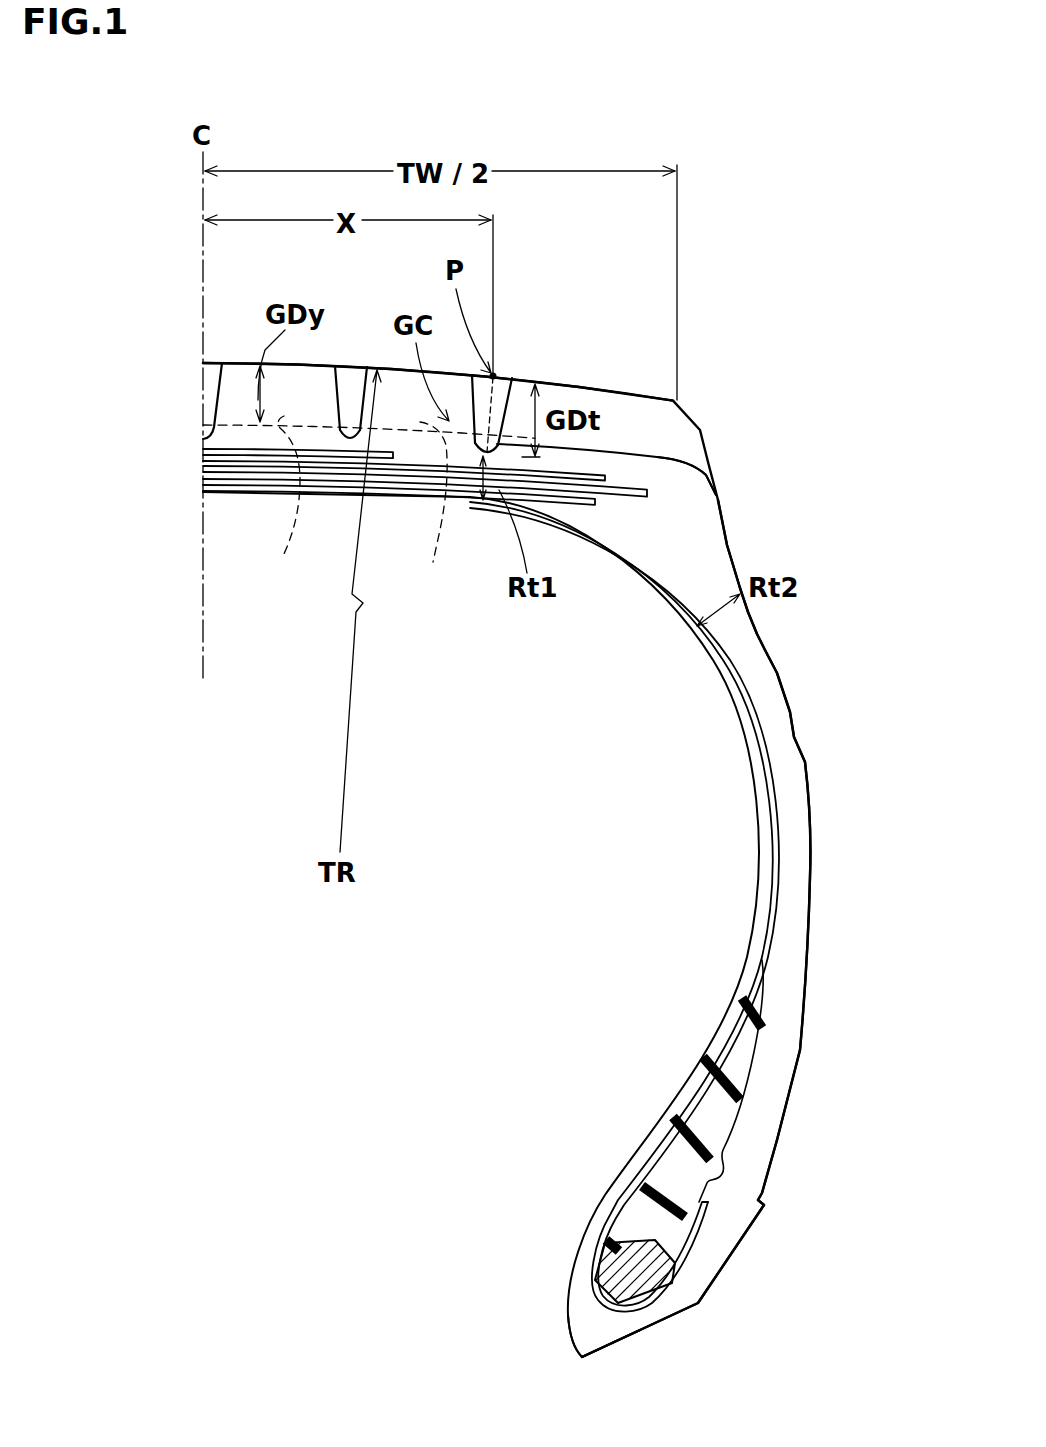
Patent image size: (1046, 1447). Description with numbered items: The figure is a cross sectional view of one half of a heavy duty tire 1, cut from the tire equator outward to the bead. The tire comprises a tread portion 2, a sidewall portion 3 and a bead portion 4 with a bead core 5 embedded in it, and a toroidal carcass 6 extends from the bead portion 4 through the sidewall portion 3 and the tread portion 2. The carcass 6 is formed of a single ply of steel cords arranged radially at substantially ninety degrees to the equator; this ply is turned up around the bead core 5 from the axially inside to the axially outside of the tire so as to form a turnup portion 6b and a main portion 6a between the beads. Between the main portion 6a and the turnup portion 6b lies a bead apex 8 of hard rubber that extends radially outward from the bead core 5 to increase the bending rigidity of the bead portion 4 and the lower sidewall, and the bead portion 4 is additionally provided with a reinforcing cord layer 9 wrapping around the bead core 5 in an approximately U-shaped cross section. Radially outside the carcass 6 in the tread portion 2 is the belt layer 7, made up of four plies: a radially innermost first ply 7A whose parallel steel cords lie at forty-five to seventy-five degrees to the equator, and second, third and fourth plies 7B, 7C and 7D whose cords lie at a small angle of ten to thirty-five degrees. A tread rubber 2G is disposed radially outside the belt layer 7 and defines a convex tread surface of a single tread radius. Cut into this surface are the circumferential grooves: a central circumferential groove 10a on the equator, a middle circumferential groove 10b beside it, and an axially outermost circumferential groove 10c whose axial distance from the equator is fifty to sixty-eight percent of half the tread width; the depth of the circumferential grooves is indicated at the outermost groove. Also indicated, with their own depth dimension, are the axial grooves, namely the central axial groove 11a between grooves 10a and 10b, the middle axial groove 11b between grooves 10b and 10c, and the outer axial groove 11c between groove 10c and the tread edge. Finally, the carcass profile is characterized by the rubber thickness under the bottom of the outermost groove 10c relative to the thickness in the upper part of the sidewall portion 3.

The heavy duty tire 1 is at (701, 252).
The tread portion 2 is at (585, 293).
The tread rubber 2G is at (628, 387).
The sidewall portion 3 is at (821, 743).
The bead portion 4 is at (775, 1214).
The bead core 5 is at (622, 1272).
The carcass 6 is at (522, 1022).
The main portion 6a is at (717, 1045).
The turnup portion 6b is at (723, 1157).
The belt layer 7 is at (110, 403).
The first ply 7A is at (205, 488).
The second ply 7B is at (205, 474).
The third ply 7C is at (205, 462).
The fourth ply 7D is at (205, 450).
The bead apex 8 is at (738, 1037).
The reinforcing cord layer 9 is at (586, 1300).
The central circumferential groove 10a is at (224, 367).
The middle circumferential groove 10b is at (356, 370).
The axially outermost circumferential groove 10c is at (513, 370).
The central axial groove 11a is at (280, 502).
The middle axial groove 11b is at (432, 507).
The outer axial groove 11c is at (653, 457).